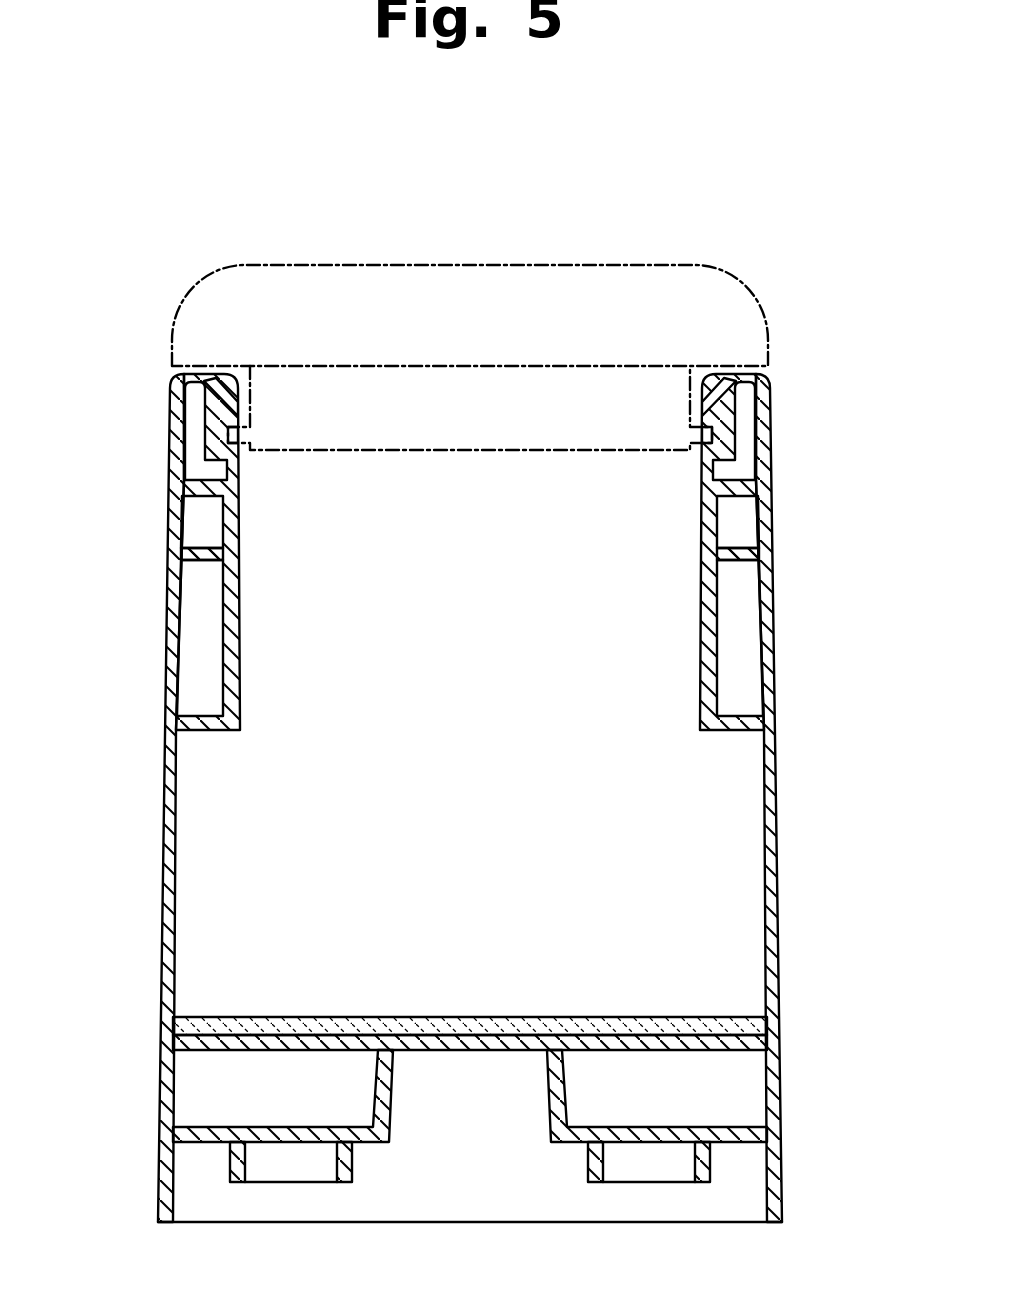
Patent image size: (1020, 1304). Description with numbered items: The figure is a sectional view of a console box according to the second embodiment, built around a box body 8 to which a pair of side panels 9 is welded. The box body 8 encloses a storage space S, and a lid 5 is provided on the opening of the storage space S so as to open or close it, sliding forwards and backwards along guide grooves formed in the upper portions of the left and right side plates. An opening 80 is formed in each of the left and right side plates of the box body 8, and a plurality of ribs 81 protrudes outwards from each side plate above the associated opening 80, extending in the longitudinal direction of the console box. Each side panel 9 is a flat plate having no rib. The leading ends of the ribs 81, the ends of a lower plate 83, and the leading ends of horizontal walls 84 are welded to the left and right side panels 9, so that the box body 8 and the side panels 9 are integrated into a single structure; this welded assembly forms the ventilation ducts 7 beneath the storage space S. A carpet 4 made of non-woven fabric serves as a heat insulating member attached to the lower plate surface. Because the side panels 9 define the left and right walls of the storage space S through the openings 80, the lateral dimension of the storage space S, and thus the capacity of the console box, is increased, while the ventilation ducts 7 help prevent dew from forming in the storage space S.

The carpet 4 is at (244, 1020).
The lid 5 is at (458, 282).
The ventilation duct 7 is at (288, 1100).
The box body 8 is at (240, 618).
The side panel 9 is at (160, 817).
The opening 80 is at (188, 837).
The rib 81 is at (205, 558).
The lower plate 83 is at (475, 1020).
The horizontal wall 84 is at (226, 1140).
The storage space S is at (452, 719).